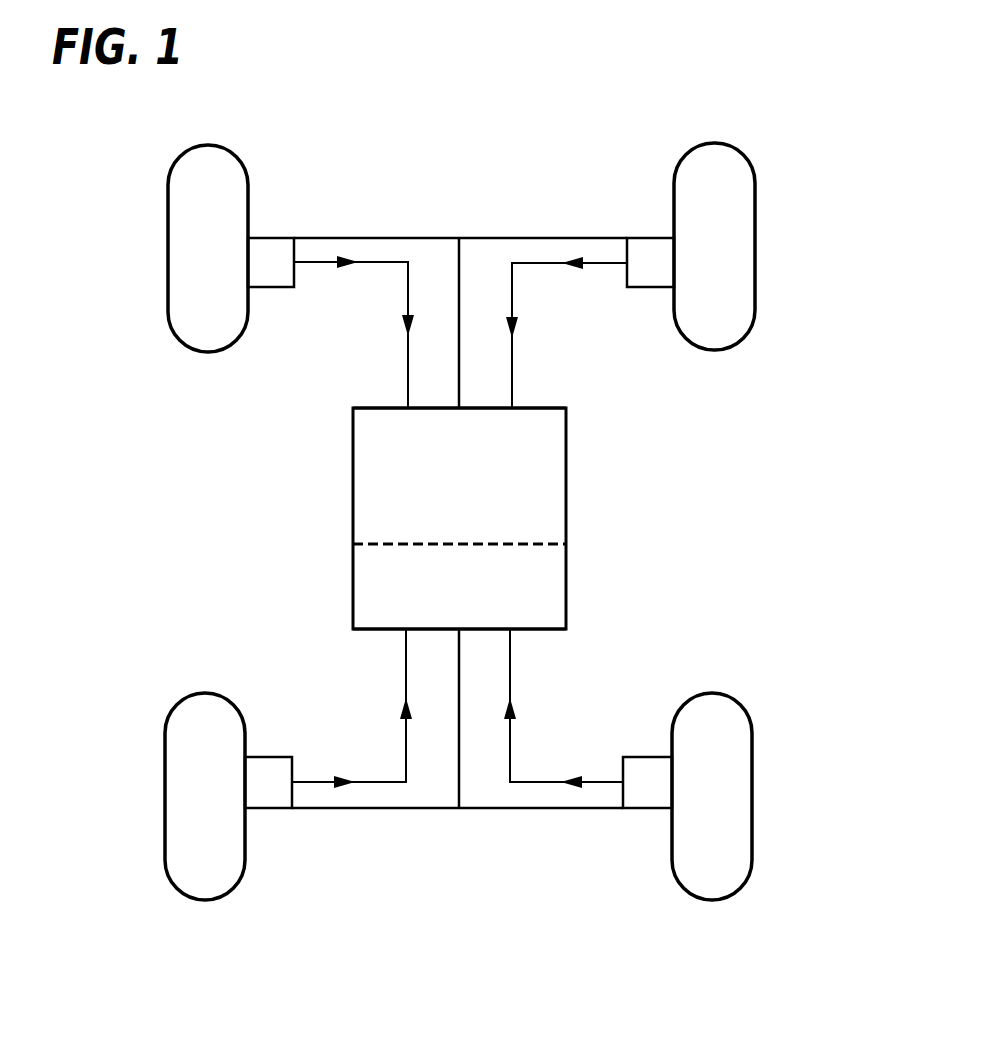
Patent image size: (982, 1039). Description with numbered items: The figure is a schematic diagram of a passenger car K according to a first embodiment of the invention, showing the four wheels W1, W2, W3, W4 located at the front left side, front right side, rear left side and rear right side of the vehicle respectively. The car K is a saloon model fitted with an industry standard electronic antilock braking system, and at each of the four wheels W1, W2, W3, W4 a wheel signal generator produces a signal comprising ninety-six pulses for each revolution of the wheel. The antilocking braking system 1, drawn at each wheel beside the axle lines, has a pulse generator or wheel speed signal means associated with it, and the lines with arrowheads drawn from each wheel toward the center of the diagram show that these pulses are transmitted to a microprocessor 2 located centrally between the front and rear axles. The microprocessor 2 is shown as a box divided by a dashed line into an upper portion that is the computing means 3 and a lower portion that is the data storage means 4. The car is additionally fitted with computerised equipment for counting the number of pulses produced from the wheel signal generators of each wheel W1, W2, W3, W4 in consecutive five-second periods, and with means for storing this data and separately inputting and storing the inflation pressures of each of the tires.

The passenger car K is at (426, 171).
The front left wheel W1 is at (168, 223).
The front right wheel W2 is at (755, 223).
The rear left wheel W3 is at (165, 755).
The rear right wheel W4 is at (752, 755).
The antilocking braking system 1 is at (265, 288).
The microprocessor 2 is at (578, 493).
The computing means 3 is at (353, 504).
The data storage means 4 is at (353, 618).